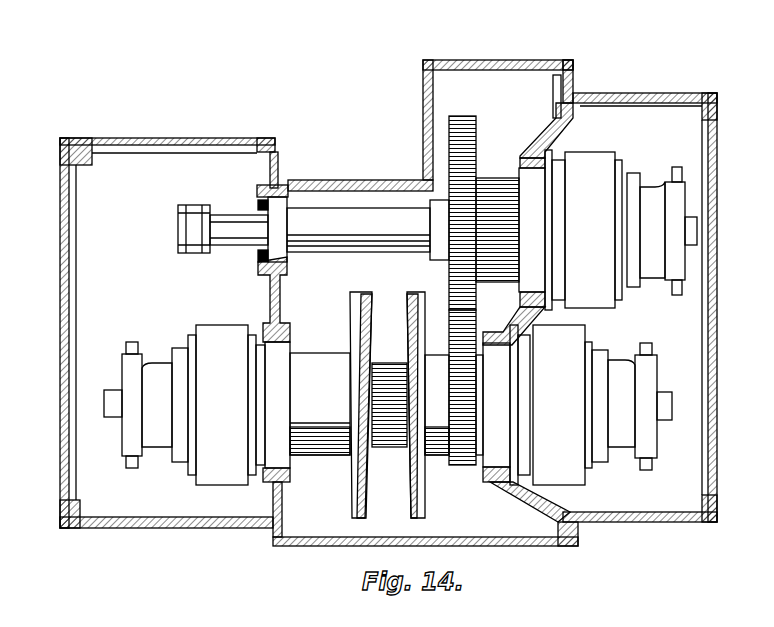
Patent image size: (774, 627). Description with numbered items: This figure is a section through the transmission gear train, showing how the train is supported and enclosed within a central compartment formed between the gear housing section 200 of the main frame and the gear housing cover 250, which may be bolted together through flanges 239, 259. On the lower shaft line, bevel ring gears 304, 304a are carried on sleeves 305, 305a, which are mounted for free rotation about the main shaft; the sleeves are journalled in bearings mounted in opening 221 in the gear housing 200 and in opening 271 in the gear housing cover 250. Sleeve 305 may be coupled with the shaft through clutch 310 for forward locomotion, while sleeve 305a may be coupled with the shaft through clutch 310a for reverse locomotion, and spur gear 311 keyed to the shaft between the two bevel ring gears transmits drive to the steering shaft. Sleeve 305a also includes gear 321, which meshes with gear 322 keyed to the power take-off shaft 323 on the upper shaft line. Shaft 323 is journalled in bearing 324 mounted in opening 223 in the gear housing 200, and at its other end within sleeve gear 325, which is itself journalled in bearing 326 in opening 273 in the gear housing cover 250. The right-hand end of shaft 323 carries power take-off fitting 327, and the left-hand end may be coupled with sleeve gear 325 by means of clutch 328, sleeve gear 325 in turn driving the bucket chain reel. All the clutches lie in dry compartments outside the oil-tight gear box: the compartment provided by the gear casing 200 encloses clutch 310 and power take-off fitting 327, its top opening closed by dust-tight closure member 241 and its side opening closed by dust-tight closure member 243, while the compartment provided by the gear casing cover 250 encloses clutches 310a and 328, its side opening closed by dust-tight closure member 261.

The gear housing 200 is at (366, 180).
The opening 221 is at (283, 340).
The opening 223 is at (283, 188).
The flange 239 is at (547, 70).
The dust-tight closure member 241 is at (168, 138).
The dust-tight closure member 243 is at (60, 345).
The gear housing cover 250 is at (625, 93).
The flange 259 is at (574, 64).
The dust-tight closure member 261 is at (717, 283).
The opening 271 is at (500, 482).
The opening 273 is at (525, 157).
The bevel ring gear 304 is at (352, 512).
The bevel ring gear 304a is at (428, 512).
The sleeve 305 is at (322, 456).
The sleeve 305a is at (446, 458).
The clutch 310 is at (206, 485).
The clutch 310a is at (590, 486).
The spur gear 311 is at (385, 364).
The gear 321 is at (476, 413).
The gear 322 is at (466, 116).
The power take-off shaft 323 is at (370, 250).
The bearing 324 is at (288, 250).
The sleeve gear 325 is at (490, 282).
The bearing 326 is at (520, 172).
The power take-off fitting 327 is at (223, 206).
The clutch 328 is at (600, 152).